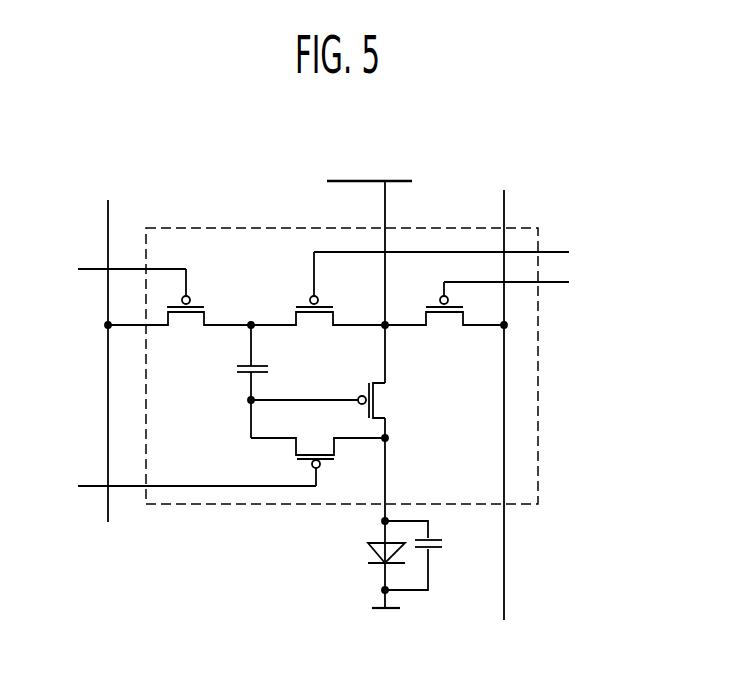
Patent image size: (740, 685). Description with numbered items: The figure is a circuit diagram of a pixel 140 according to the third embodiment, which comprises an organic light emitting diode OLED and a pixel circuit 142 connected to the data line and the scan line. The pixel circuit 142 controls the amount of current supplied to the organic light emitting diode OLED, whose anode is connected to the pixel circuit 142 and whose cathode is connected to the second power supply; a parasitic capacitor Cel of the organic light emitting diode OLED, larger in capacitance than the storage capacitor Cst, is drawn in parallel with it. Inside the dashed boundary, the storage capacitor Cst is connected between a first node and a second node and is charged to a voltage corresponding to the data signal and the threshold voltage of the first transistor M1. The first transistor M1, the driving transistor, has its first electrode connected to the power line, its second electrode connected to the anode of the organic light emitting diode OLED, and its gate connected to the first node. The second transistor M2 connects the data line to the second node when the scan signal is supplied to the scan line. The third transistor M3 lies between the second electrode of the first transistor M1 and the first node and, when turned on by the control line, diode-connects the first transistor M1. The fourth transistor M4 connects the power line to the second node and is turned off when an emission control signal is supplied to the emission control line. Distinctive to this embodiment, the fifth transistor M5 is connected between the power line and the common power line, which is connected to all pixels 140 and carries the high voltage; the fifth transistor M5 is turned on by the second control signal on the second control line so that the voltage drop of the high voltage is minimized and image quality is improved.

The pixel 140 is at (548, 148).
The pixel circuit 142 is at (228, 228).
The first transistor M1 is at (382, 400).
The second transistor M2 is at (185, 310).
The third transistor M3 is at (318, 448).
The fourth transistor M4 is at (314, 301).
The fifth transistor M5 is at (444, 316).
The storage capacitor Cst is at (237, 381).
The parasitic capacitor Cel is at (430, 555).
The organic light emitting diode OLED is at (361, 563).